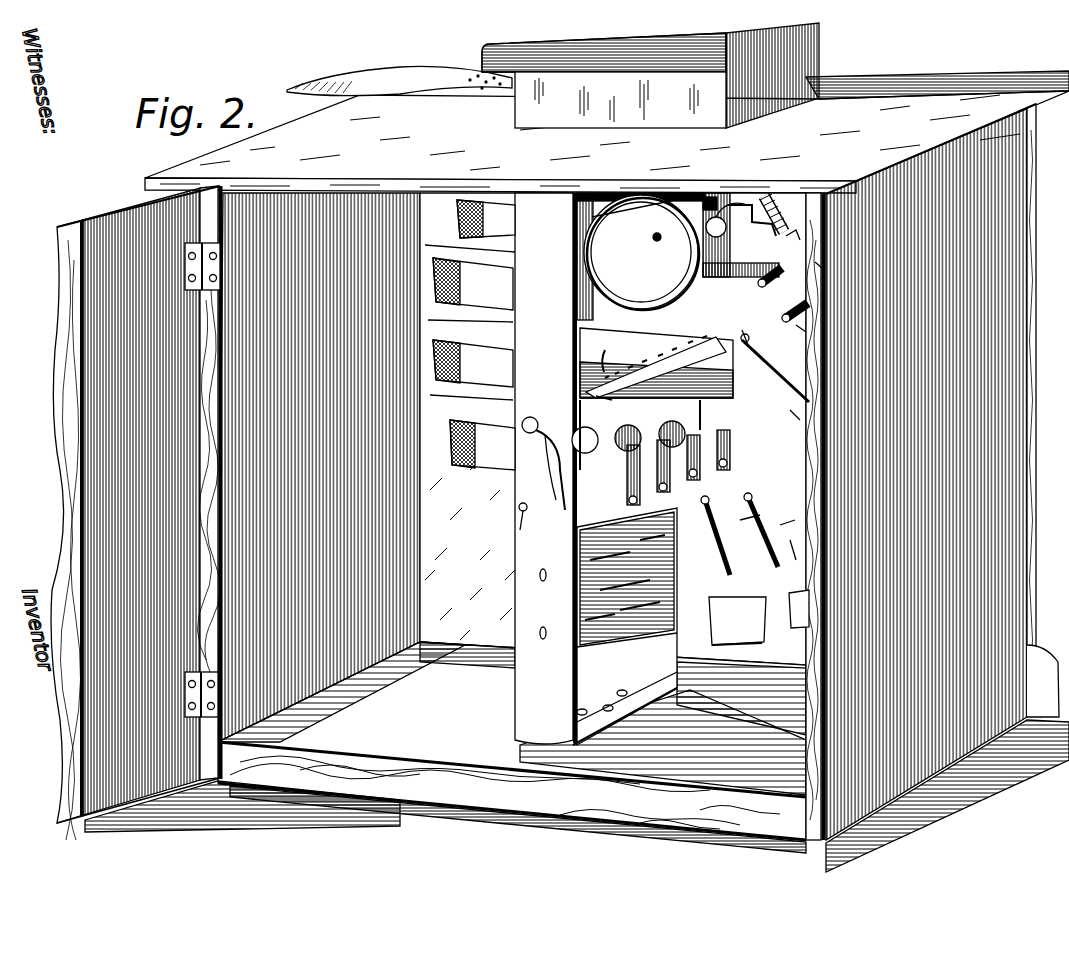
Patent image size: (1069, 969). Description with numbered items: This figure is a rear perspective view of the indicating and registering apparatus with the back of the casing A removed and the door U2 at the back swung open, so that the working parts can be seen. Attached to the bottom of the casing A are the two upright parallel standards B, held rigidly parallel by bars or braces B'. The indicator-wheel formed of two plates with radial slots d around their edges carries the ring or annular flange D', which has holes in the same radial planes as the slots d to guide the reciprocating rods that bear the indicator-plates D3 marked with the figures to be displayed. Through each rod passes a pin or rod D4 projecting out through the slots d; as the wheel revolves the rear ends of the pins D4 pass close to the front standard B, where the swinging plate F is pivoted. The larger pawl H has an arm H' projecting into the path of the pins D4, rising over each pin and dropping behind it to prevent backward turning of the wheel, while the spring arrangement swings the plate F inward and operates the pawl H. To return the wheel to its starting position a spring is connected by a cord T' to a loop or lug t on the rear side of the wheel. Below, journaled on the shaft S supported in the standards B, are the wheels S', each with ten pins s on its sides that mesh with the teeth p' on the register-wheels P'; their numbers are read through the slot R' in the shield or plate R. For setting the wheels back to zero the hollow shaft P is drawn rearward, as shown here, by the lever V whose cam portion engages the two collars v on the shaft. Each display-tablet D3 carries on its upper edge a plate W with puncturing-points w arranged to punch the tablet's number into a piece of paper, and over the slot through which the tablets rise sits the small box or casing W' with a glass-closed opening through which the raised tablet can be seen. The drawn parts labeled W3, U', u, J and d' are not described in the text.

The casing A is at (1048, 475).
The door U2 is at (136, 513).
The coin chute flap W3 is at (378, 84).
The small box or casing W' is at (650, 75).
The upright parallel standards B is at (658, 469).
The bars or braces B' is at (555, 468).
The dial U' is at (641, 252).
The swinging plate F is at (712, 197).
The larger pawl H is at (773, 196).
The arm of pawl H' is at (797, 219).
The ball weight u is at (727, 228).
The lever J is at (752, 228).
The pin or rod D4 is at (770, 284).
The loop or lug t is at (752, 334).
The ring or annular flange D' is at (791, 341).
The cord T' is at (775, 371).
The hollow shaft P is at (775, 404).
The radial slots d is at (788, 403).
The pin d' is at (792, 543).
The slot R' is at (656, 360).
The shield or plate R is at (665, 378).
The teeth p' is at (604, 352).
The wheels S' is at (581, 455).
The register-wheels P' is at (546, 392).
The pins s is at (651, 452).
The collars v is at (530, 414).
The lever V is at (543, 470).
The shaft S is at (507, 533).
The indicator-plates D3 is at (760, 612).
The plate W is at (433, 337).
The puncturing-points w is at (430, 274).